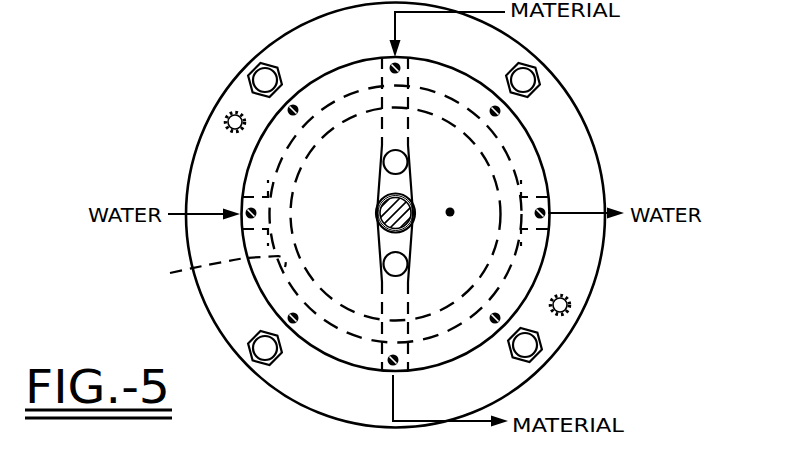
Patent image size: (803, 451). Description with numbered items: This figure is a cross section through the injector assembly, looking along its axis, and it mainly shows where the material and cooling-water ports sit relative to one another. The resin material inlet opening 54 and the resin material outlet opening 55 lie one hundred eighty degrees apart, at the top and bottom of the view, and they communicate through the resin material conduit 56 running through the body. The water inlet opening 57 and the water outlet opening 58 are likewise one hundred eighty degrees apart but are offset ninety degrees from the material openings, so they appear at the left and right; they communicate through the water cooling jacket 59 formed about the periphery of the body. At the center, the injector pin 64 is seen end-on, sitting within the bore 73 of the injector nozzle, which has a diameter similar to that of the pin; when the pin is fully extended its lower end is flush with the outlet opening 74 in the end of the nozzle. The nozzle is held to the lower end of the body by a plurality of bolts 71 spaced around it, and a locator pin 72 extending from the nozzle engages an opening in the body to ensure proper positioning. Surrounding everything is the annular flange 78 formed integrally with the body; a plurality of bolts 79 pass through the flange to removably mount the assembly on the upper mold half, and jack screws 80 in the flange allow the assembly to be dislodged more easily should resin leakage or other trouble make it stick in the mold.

The resin material inlet opening 54 is at (388, 53).
The resin material outlet opening 55 is at (383, 378).
The resin material conduit 56 is at (380, 172).
The water inlet opening 57 is at (237, 203).
The water outlet opening 58 is at (552, 200).
The water cooling jacket 59 is at (209, 271).
The injector pin 64 is at (383, 228).
The bolts 71 is at (290, 108).
The locator pin 72 is at (450, 210).
The bore 73 is at (386, 208).
The outlet opening 74 is at (408, 222).
The annular flange 78 is at (607, 255).
The bolts 79 is at (255, 74).
The jack screws 80 is at (225, 122).